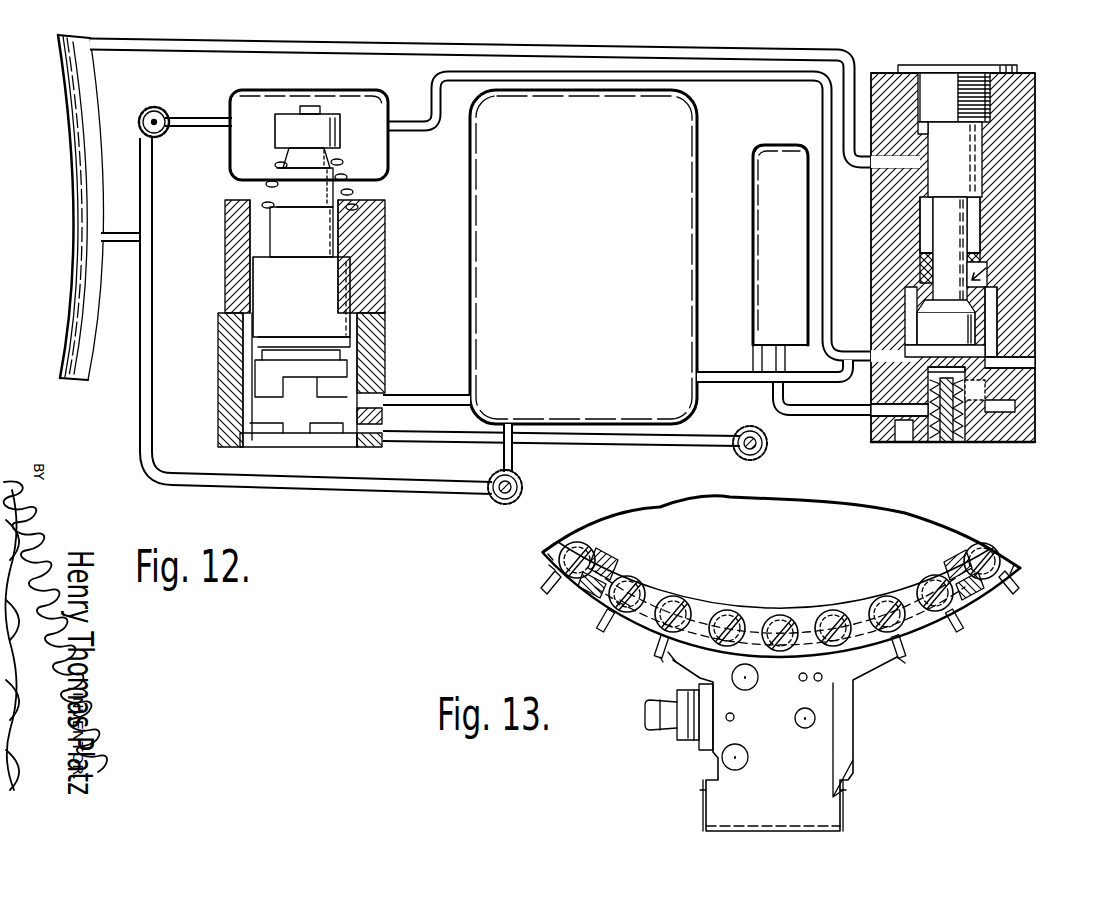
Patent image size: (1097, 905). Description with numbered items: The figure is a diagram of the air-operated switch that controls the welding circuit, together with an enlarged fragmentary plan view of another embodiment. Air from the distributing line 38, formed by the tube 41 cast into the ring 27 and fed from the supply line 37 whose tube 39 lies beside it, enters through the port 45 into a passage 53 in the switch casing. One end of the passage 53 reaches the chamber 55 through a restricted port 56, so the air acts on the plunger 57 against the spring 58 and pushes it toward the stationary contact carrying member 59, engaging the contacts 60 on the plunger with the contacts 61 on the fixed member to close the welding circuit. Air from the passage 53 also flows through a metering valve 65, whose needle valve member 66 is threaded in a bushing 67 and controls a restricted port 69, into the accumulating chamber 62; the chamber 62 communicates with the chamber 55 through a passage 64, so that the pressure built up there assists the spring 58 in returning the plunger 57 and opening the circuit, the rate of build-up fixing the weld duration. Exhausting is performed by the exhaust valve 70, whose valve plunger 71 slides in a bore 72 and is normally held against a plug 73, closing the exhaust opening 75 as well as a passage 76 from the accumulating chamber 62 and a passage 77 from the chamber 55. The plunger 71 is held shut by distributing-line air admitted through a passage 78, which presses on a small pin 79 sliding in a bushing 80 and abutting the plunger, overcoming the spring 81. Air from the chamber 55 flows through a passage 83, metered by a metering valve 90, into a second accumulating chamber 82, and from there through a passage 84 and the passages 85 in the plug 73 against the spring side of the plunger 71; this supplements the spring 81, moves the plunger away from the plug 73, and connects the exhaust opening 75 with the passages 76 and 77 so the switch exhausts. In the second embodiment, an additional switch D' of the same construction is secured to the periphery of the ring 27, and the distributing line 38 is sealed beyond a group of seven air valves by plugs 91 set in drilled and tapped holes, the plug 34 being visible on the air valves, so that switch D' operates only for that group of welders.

In FIG. 13, the ring 27 is at (658, 645).
In FIG. 13, the plug 34 is at (728, 620).
In FIG. 13, the fluid pressure supply line 37 is at (668, 585).
In FIG. 12, the fluid pressure distributing line 38 is at (78, 212).
In FIG. 13, the fluid pressure distributing line 38 is at (625, 615).
In FIG. 13, the tube 39 is at (600, 558).
In FIG. 12, the tube 41 is at (75, 168).
In FIG. 13, the tube 41 is at (557, 582).
In FIG. 12, the port 45 is at (130, 243).
In FIG. 12, the passage 53 is at (154, 200).
In FIG. 12, the chamber 55 is at (232, 147).
In FIG. 12, the restricted port 56 is at (163, 112).
In FIG. 12, the plunger 57 is at (362, 232).
In FIG. 12, the spring 58 is at (340, 158).
In FIG. 12, the stationary contact carrying member 59 is at (305, 448).
In FIG. 12, the contacts 60 is at (282, 400).
In FIG. 12, the contacts 61 is at (328, 418).
In FIG. 12, the accumulating chamber 62 is at (470, 274).
In FIG. 12, the passage 64 is at (416, 395).
In FIG. 12, the metering valve 65 is at (512, 488).
In FIG. 12, the needle valve member 66 is at (514, 474).
In FIG. 12, the bushing 67 is at (520, 482).
In FIG. 12, the restricted port 69 is at (522, 493).
In FIG. 12, the exhaust valve 70 is at (974, 269).
In FIG. 12, the valve plunger 71 is at (980, 333).
In FIG. 12, the bore 72 is at (1000, 300).
In FIG. 12, the plug 73 is at (986, 444).
In FIG. 12, the exhaust opening 75 is at (1037, 363).
In FIG. 12, the passage 76 is at (710, 371).
In FIG. 12, the passage 77 is at (728, 86).
In FIG. 12, the passage 78 is at (398, 52).
In FIG. 12, the pin 79 is at (985, 214).
In FIG. 12, the bushing 80 is at (985, 240).
In FIG. 12, the spring 81 is at (946, 443).
In FIG. 12, the second accumulating chamber 82 is at (755, 262).
In FIG. 12, the passage 83 is at (684, 446).
In FIG. 12, the passage 84 is at (838, 416).
In FIG. 12, the passages 85 is at (920, 440).
In FIG. 12, the metering valve 90 is at (765, 455).
In FIG. 13, the plug 91 is at (580, 595).
In FIG. 13, the switch D' is at (781, 663).